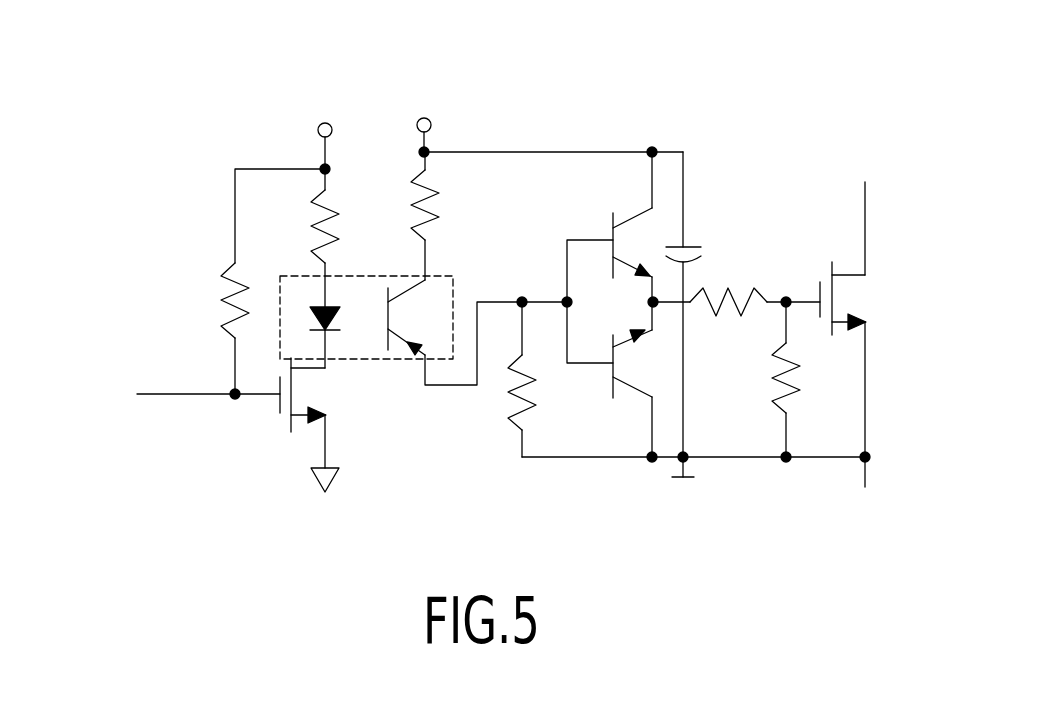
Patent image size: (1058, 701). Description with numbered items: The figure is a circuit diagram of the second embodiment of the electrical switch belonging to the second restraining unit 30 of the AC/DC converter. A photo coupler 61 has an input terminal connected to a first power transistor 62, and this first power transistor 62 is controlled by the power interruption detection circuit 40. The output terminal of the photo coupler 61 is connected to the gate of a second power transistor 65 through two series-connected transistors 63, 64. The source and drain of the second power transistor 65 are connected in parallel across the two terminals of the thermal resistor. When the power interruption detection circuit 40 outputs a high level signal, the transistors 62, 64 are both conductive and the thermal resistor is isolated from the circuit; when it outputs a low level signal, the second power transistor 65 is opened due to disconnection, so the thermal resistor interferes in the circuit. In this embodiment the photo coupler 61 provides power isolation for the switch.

The second restraining unit 30 is at (700, 110).
The power interruption detection circuit 40 is at (156, 401).
The photo coupler 61 is at (360, 287).
The first power transistor 62 is at (304, 425).
The series-connected transistor 63 is at (613, 227).
The series-connected transistor 64 is at (612, 379).
The second power transistor 65 is at (872, 298).